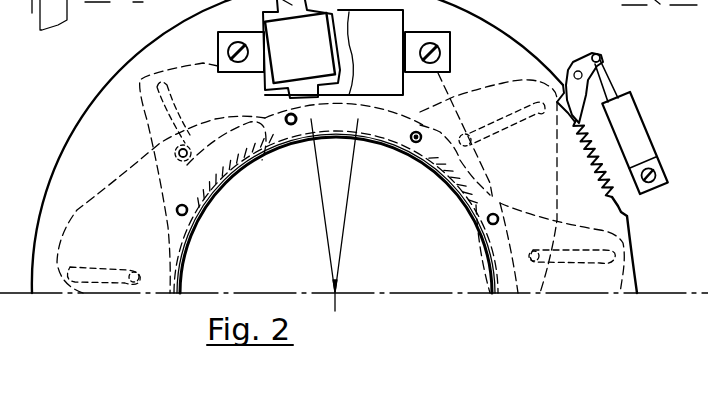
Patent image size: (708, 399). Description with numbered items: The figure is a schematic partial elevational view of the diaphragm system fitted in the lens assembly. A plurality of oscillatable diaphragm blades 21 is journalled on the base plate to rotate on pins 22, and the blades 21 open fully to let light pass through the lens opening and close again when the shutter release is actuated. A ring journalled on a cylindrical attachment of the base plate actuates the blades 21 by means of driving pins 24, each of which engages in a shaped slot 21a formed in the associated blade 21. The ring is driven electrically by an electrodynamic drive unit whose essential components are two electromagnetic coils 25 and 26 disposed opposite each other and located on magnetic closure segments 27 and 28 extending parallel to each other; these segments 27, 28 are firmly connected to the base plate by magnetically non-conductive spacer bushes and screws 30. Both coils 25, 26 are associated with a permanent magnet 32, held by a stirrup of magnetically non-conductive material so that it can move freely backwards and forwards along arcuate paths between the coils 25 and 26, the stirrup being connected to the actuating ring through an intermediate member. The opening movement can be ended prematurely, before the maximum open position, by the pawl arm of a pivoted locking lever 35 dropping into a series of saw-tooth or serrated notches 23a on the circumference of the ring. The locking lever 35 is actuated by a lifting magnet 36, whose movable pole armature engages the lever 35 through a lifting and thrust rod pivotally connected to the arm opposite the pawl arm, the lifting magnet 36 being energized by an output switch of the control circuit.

The diaphragm blades 21 is at (110, 205).
The shaped slot 21a is at (116, 266).
The pins 22 is at (405, 162).
The notches 23a is at (585, 148).
The driving pins 24 is at (187, 150).
The electromagnetic coil 25 is at (372, 15).
The electromagnetic coil 26 is at (385, 60).
The magnetic closure segment 27 is at (467, 58).
The magnetic closure segment 28 is at (430, 53).
The screws 30 is at (347, 67).
The permanent magnet 32 is at (301, 49).
The locking lever 35 is at (587, 56).
The lifting magnet 36 is at (623, 117).